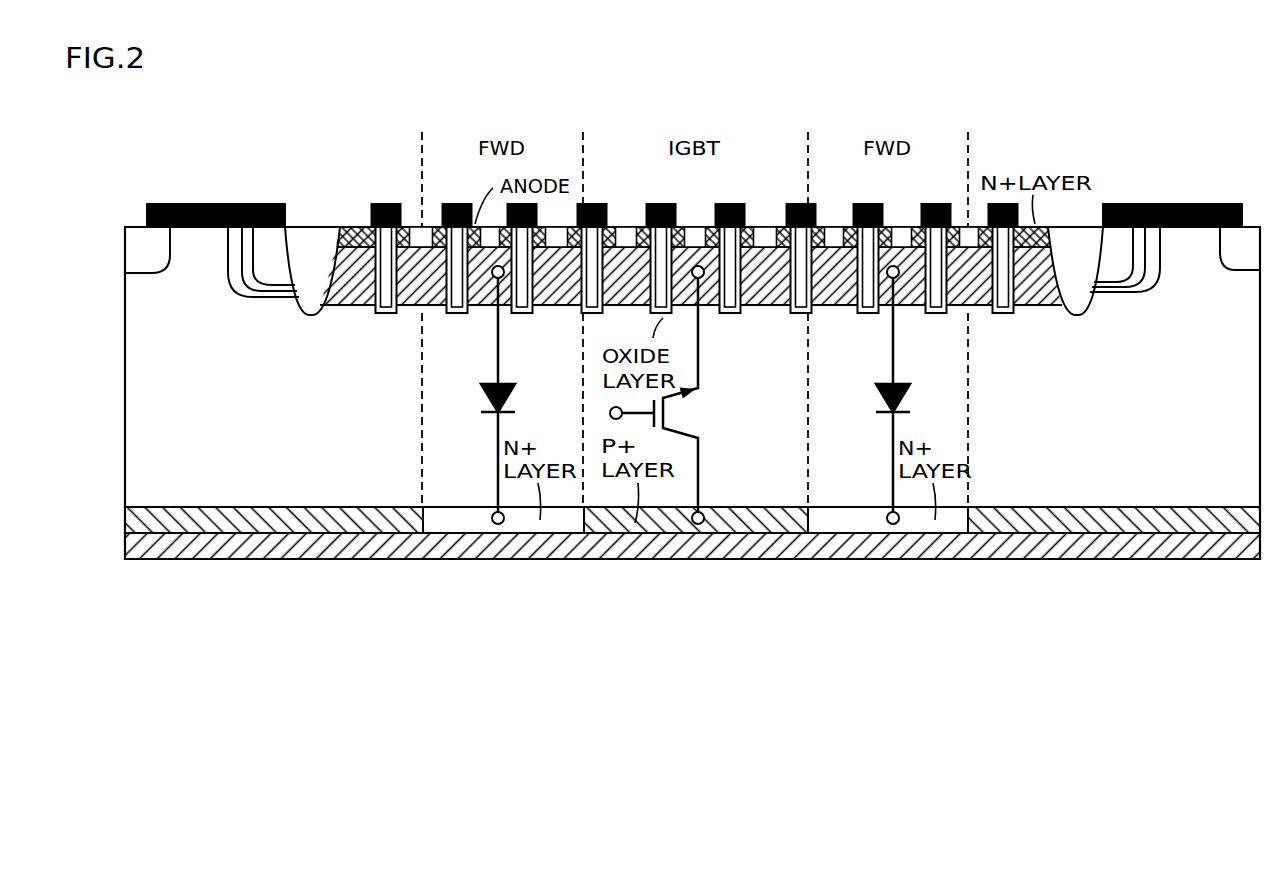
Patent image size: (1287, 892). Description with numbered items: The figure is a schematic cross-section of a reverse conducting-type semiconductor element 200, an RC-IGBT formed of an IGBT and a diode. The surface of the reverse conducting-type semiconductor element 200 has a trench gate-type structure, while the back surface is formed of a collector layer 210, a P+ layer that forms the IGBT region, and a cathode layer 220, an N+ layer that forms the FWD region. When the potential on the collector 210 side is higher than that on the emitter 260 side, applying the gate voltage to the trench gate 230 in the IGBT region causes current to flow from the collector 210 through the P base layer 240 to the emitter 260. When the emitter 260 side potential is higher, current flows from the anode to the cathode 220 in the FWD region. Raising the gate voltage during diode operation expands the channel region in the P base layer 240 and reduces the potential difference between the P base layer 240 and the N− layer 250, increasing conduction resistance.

The reverse conducting-type semiconductor element 200 is at (1112, 107).
The collector layer 210 is at (738, 522).
The cathode layer 220 is at (455, 522).
The trench gate 230 is at (380, 315).
The P base layer 240 is at (764, 290).
The N− layer 250 is at (692, 476).
The emitter 260 is at (681, 224).